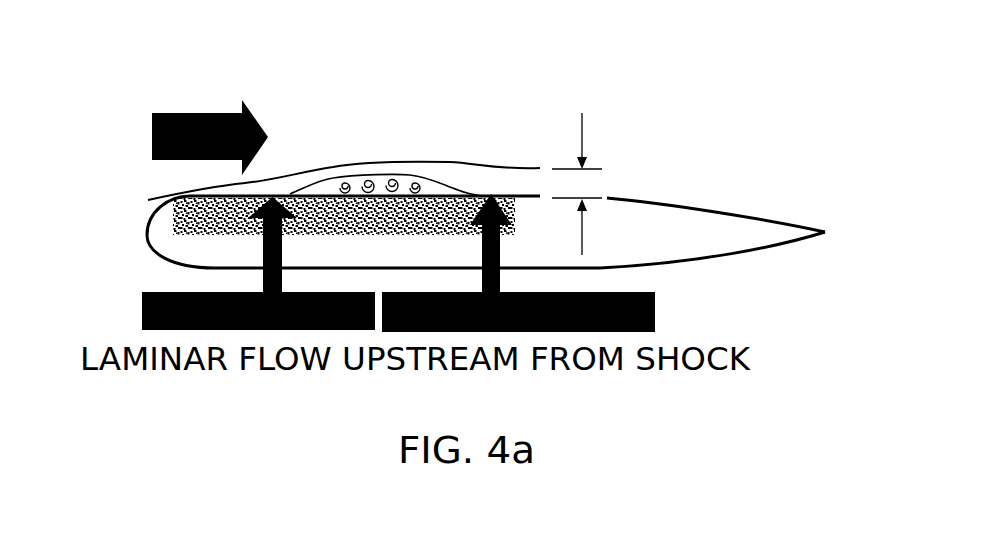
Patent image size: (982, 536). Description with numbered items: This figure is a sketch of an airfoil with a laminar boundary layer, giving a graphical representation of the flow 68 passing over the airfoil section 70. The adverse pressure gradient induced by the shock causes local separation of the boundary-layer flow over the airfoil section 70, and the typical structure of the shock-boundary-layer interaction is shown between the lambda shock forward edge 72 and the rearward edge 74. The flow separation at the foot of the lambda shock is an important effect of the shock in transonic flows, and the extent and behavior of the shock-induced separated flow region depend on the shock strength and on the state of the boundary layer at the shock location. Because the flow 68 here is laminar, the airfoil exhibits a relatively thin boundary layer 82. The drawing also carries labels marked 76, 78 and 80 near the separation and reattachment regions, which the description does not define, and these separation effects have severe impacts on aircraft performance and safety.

The flow 68 is at (190, 113).
The airfoil section 70 is at (723, 208).
The lambda shock forward edge 72 is at (272, 189).
The rearward edge 74 is at (493, 186).
The separation region 76 is at (157, 292).
The reattachment region 78 is at (657, 310).
The vortices in separation bubble 80 is at (396, 178).
The thin boundary layer 82 is at (600, 185).